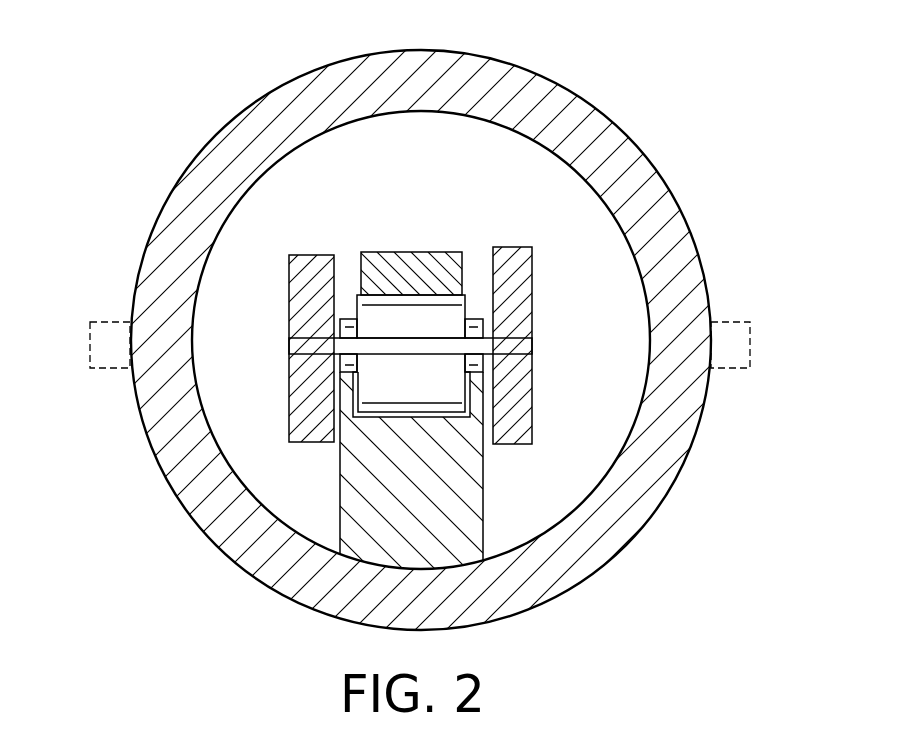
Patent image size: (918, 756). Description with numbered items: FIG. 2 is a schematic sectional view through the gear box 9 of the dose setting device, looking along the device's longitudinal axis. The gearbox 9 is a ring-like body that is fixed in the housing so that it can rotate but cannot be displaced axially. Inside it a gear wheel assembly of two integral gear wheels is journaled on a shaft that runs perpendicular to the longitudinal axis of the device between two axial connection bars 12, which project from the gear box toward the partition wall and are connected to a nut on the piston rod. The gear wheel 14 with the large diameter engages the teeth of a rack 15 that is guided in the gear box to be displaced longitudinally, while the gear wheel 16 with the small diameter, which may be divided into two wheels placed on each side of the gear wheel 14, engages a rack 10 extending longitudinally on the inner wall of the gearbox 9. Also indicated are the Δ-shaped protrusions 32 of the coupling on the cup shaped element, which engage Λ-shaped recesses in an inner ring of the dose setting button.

The gear box 9 is at (618, 514).
The rack 10 is at (352, 386).
The axial connection bars 12 is at (515, 294).
The gear wheel with a large diameter 14 is at (397, 408).
The rack 15 is at (398, 265).
The gear wheel with a small diameter 16 is at (477, 318).
The Δ-shaped protrusions 32 is at (107, 337).